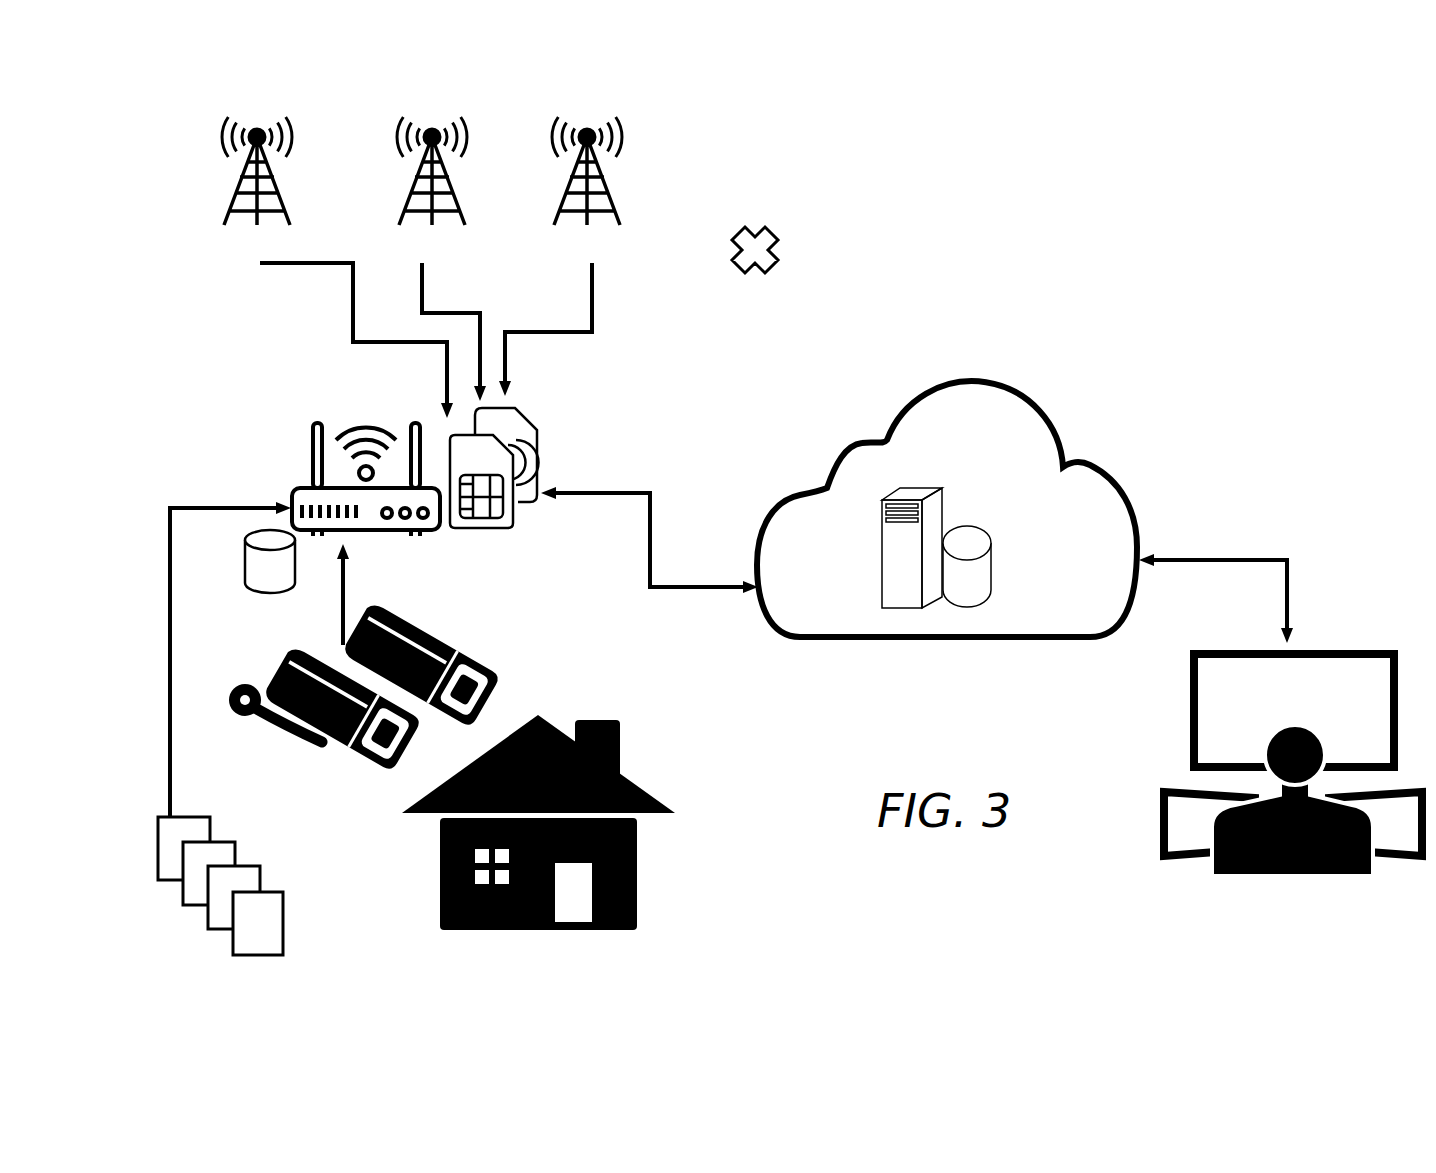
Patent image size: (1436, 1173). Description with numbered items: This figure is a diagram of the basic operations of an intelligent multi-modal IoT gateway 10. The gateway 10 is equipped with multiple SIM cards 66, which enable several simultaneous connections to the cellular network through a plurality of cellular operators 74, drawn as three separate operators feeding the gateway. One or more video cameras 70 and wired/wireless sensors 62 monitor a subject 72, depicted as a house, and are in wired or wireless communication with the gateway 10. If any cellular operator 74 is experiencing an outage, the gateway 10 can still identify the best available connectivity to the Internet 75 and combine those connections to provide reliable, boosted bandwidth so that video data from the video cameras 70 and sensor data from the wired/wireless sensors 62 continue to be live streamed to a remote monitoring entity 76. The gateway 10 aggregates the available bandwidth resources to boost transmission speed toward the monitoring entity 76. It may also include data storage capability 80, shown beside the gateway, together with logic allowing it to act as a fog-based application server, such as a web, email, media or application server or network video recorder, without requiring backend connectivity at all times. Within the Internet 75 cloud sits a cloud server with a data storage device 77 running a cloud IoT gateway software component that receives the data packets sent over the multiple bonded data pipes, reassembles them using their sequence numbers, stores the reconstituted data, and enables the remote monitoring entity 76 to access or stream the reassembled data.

The intelligent multi-modal IoT gateway 10 is at (274, 451).
The wired/wireless sensors 62 is at (280, 864).
The SIM cards 66 is at (545, 467).
The video cameras 70 is at (487, 620).
The subject 72 is at (633, 778).
The cellular operator 74 is at (675, 145).
The Internet 75 is at (1107, 483).
The remote monitoring entity 76 is at (1332, 652).
The cloud server with data storage device 77 is at (973, 498).
The data storage capability 80 is at (243, 567).